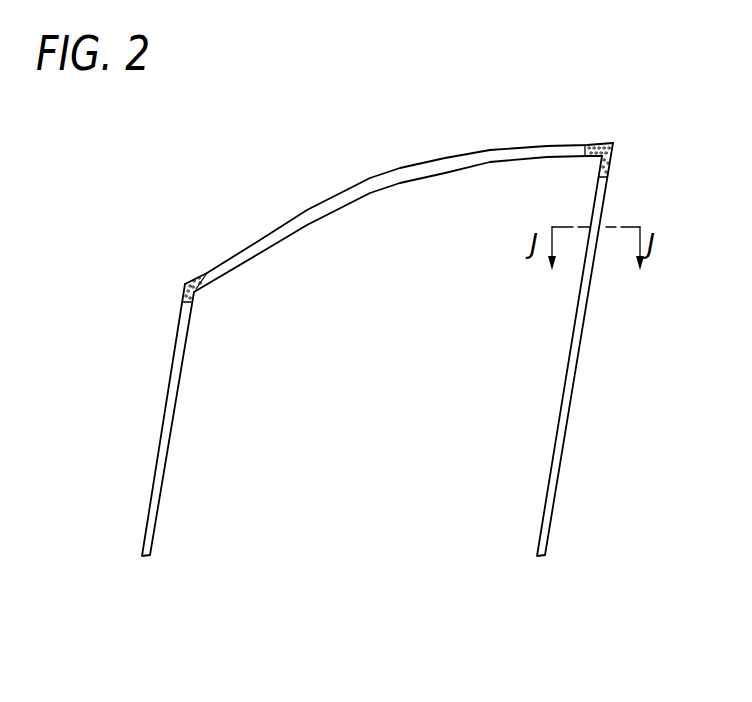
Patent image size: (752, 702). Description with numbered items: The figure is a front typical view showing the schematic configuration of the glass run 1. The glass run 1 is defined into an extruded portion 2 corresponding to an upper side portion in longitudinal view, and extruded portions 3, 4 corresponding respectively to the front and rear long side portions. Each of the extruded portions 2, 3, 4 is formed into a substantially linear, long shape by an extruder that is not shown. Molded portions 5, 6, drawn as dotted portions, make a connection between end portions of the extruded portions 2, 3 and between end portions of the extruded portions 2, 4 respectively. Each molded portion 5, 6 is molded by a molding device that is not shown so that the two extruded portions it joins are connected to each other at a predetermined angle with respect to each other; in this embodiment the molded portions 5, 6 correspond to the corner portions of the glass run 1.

The glass run 1 is at (490, 128).
The extruded portion 2 is at (370, 177).
The extruded portion 3 is at (165, 405).
The extruded portion 4 is at (588, 292).
The molded portion 5 is at (186, 282).
The molded portion 6 is at (613, 150).